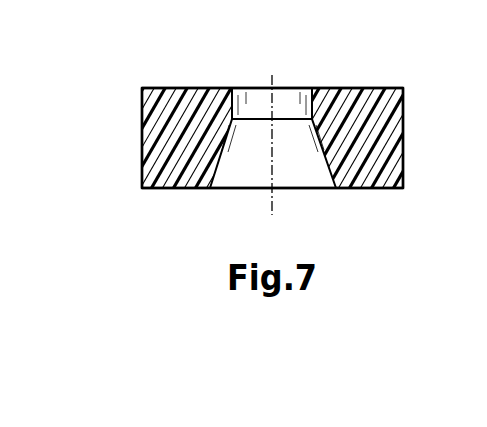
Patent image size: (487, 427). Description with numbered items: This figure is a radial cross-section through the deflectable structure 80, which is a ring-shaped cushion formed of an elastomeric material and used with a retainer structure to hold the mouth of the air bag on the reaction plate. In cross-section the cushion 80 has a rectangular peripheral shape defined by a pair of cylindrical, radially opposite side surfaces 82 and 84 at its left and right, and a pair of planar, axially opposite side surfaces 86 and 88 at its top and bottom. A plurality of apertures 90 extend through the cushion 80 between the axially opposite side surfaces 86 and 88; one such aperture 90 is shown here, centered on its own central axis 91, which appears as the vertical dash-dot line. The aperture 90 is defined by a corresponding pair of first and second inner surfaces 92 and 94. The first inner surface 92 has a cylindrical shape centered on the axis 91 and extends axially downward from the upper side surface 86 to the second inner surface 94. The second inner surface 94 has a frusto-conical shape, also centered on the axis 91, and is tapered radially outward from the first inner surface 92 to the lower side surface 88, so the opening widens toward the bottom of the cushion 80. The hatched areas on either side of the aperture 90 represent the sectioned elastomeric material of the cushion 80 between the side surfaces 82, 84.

The deflectable structure 80 is at (112, 75).
The radially opposite side surface 82 is at (142, 140).
The radially opposite side surface 84 is at (404, 143).
The axially opposite side surface 86 is at (383, 88).
The axially opposite side surface 88 is at (367, 188).
The aperture 90 is at (247, 66).
The central axis 91 is at (272, 75).
The first inner surface 92 is at (311, 112).
The second inner surface 94 is at (323, 145).